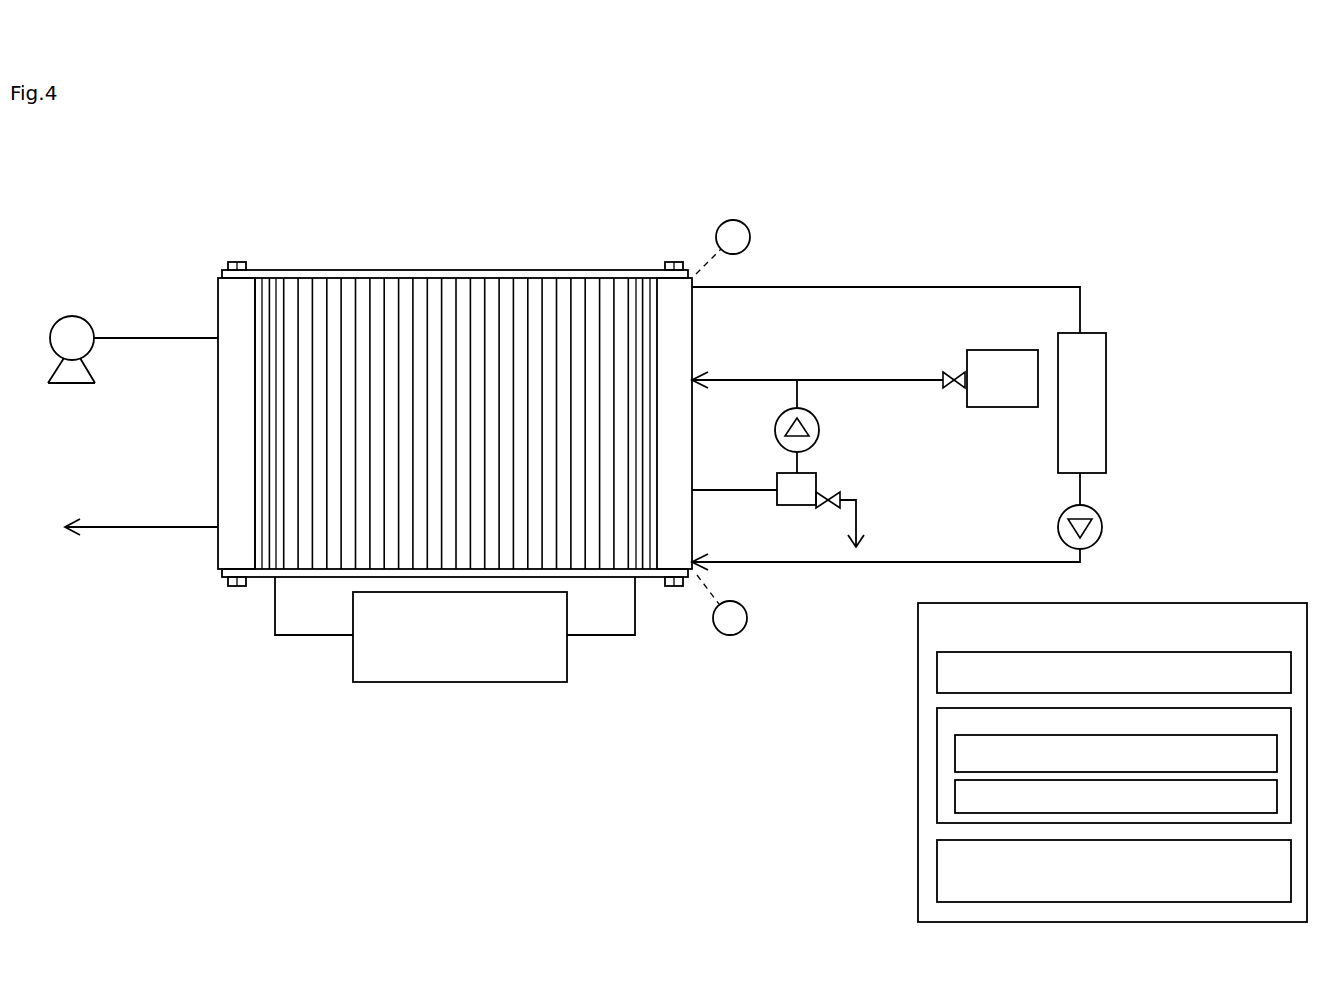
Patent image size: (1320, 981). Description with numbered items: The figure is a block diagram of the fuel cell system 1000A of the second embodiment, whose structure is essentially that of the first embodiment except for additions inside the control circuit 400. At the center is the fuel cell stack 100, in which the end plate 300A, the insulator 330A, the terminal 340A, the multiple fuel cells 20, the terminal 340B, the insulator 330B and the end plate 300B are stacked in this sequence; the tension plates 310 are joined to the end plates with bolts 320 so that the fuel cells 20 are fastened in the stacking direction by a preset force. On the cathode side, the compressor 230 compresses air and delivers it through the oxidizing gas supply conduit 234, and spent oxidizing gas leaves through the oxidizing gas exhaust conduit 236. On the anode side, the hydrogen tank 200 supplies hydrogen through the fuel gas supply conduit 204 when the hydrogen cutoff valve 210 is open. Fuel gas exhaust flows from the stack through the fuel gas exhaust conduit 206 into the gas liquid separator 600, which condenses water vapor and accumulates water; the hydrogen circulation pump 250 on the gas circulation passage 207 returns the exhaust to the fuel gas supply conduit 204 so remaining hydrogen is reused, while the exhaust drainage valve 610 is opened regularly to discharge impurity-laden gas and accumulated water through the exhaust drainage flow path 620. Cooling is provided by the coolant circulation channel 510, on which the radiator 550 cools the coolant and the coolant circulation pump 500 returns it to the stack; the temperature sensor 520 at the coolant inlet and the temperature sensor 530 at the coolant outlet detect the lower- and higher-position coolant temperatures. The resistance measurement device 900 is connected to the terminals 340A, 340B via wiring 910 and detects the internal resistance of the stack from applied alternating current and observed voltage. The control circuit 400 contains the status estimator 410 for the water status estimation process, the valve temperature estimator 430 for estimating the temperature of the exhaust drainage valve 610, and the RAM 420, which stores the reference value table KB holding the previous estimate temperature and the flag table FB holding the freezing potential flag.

The fuel cell system 1000A is at (138, 197).
The fuel cell stack 100 is at (358, 190).
The fuel cells 20 is at (548, 308).
The end plate 300A is at (228, 448).
The end plate 300B is at (683, 432).
The tension plates 310 is at (435, 303).
The bolts 320 is at (238, 262).
The insulator 330A is at (263, 305).
The insulator 330B is at (648, 285).
The terminal 340A is at (275, 305).
The terminal 340B is at (635, 285).
The compressor 230 is at (72, 385).
The oxidizing gas supply conduit 234 is at (137, 340).
The oxidizing gas exhaust conduit 236 is at (148, 530).
The hydrogen tank 200 is at (1000, 408).
The hydrogen cutoff valve 210 is at (945, 375).
The fuel gas supply conduit 204 is at (912, 383).
The hydrogen circulation pump 250 is at (820, 430).
The gas circulation passage 207 is at (800, 466).
The fuel gas exhaust conduit 206 is at (740, 492).
The gas liquid separator 600 is at (793, 506).
The exhaust drainage valve 610 is at (838, 497).
The exhaust drainage flow path 620 is at (860, 512).
The coolant circulation pump 500 is at (1103, 525).
The coolant circulation channel 510 is at (1082, 298).
The radiator 550 is at (1108, 407).
The temperature sensor 520 is at (749, 617).
The temperature sensor 530 is at (752, 236).
The resistance measurement device 900 is at (378, 684).
The wiring 910 is at (300, 640).
The control circuit 400 is at (1182, 588).
The status estimator 410 is at (937, 670).
The RAM 420 is at (937, 724).
The reference value table KB is at (955, 750).
The flag table FB is at (955, 793).
The valve temperature estimator 430 is at (937, 868).